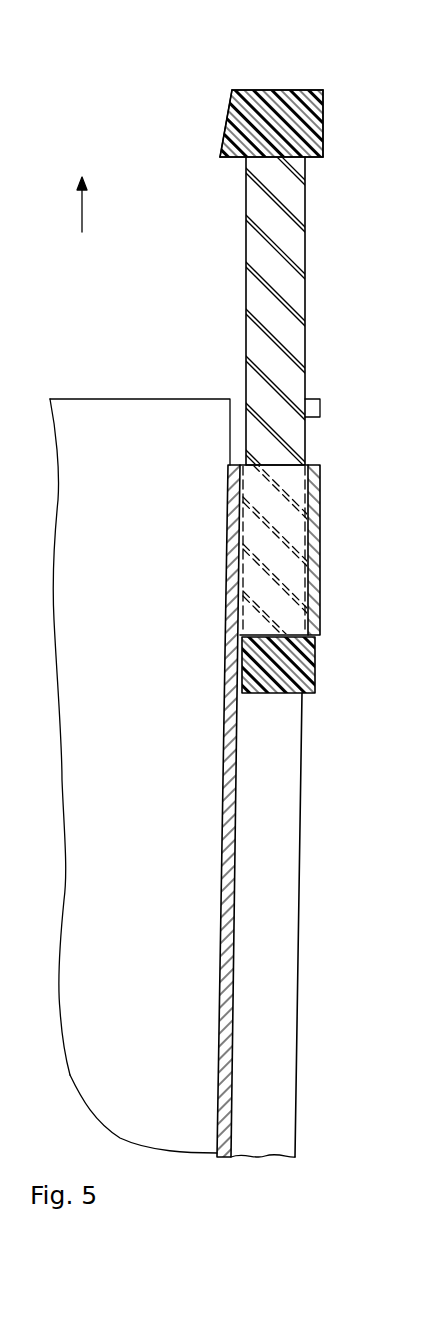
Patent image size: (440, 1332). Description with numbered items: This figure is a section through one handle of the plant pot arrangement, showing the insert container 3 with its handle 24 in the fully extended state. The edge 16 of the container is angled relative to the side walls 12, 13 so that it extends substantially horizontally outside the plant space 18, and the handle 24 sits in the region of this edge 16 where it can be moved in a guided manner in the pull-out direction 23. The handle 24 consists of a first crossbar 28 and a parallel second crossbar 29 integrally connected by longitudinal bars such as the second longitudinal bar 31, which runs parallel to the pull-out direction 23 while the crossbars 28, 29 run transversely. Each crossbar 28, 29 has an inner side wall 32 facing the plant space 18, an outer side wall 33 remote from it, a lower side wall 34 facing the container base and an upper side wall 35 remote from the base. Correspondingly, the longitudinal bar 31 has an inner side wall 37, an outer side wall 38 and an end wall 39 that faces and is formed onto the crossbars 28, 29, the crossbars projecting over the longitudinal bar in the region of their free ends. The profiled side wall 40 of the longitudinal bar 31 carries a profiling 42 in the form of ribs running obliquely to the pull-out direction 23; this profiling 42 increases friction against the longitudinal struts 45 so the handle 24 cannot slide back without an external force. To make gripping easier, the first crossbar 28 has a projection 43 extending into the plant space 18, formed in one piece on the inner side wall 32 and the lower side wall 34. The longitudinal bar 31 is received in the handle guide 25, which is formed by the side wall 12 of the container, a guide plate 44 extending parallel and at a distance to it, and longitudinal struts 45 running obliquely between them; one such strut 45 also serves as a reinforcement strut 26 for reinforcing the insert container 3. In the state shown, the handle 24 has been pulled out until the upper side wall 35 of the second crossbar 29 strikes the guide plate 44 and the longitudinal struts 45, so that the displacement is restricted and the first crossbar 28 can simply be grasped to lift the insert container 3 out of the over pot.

The insert container 3 is at (83, 144).
The side wall of the container 12 is at (236, 882).
The side wall of the container 13 is at (96, 401).
The edge of the container 16 is at (320, 409).
The plant space 18 is at (128, 789).
The pull-out direction 23 is at (83, 213).
The handle 24 is at (302, 84).
The handle guide 25 is at (330, 531).
The reinforcement strut 26 is at (290, 823).
The first crossbar 28 is at (281, 84).
The second crossbar 29 is at (328, 655).
The second longitudinal bar 31 is at (316, 213).
The inner side wall 32 is at (230, 114).
The outer side wall 33 is at (324, 119).
The lower side wall 34 is at (316, 158).
The upper side wall 35 is at (243, 90).
The inner side wall 37 is at (247, 280).
The outer side wall 38 is at (304, 280).
The end wall 39 is at (236, 144).
The profiled side wall 40 is at (254, 345).
The profiling 42 is at (278, 447).
The projection 43 is at (222, 153).
The guide plate 44 is at (320, 472).
The longitudinal strut 45 is at (297, 482).